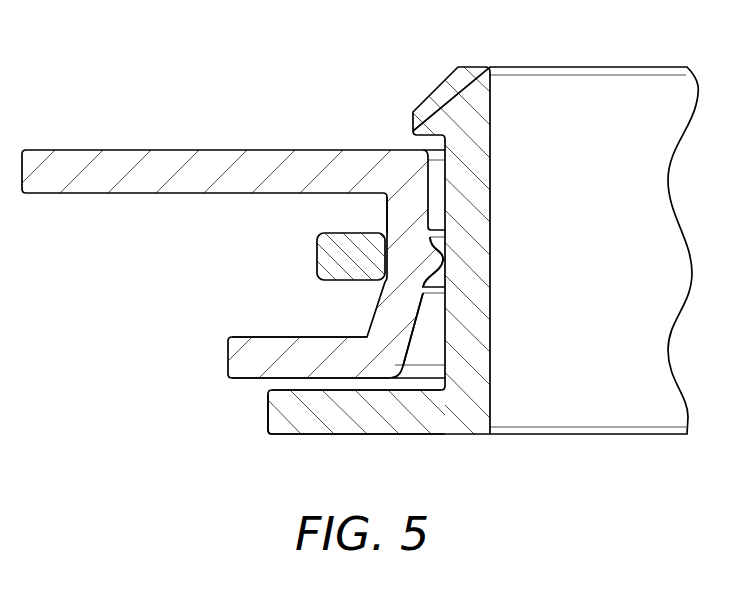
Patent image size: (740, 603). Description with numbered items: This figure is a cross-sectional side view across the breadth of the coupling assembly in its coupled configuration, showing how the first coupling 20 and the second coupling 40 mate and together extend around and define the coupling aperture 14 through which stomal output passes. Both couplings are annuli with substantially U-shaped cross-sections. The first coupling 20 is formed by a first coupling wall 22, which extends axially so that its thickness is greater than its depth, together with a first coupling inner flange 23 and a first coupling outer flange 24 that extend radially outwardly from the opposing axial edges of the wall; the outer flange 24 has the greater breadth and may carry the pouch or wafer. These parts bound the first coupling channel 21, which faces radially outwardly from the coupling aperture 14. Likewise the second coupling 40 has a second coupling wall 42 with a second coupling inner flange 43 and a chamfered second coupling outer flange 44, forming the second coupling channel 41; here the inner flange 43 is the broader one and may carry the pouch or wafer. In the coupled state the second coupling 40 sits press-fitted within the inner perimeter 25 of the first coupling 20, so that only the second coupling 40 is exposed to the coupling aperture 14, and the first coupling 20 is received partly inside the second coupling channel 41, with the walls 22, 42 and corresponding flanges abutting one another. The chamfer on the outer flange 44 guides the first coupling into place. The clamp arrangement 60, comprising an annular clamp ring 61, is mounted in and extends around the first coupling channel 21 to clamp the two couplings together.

The coupling aperture 14 is at (585, 260).
The first coupling 20 is at (284, 236).
The first coupling channel 21 is at (258, 304).
The first coupling wall 22 is at (398, 212).
The first coupling inner flange 23 is at (240, 355).
The first coupling outer flange 24 is at (214, 165).
The inner perimeter 25 is at (428, 342).
The second coupling 40 is at (483, 249).
The second coupling channel 41 is at (356, 434).
The second coupling wall 42 is at (540, 90).
The second coupling inner flange 43 is at (285, 423).
The second coupling outer flange 44 is at (438, 83).
The clamp arrangement 60 is at (304, 256).
The clamp ring 61 is at (318, 255).